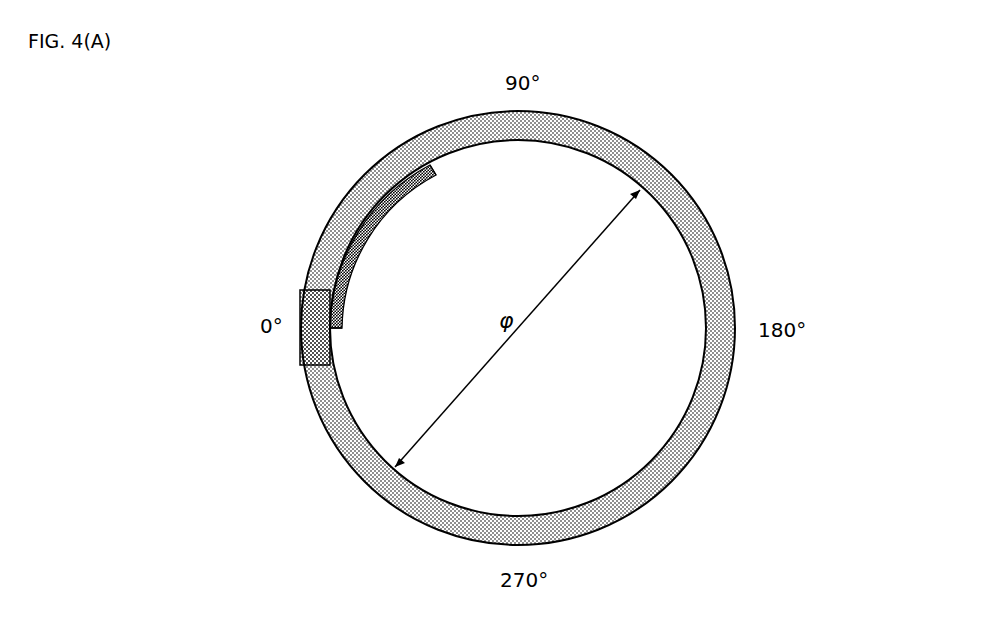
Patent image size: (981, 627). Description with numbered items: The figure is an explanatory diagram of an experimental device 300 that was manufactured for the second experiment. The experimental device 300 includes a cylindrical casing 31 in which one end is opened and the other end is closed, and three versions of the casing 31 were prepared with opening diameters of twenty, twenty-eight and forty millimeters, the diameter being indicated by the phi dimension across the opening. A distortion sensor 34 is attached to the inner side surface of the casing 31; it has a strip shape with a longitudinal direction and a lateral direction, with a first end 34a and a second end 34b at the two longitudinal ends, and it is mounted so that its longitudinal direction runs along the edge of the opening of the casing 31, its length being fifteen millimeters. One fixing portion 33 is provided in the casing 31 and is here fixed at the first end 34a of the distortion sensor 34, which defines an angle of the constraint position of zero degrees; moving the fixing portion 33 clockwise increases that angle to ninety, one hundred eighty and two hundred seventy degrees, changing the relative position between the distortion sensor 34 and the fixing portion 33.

The experimental device 300 is at (598, 118).
The casing 31 is at (686, 444).
The fixing portion 33 is at (300, 291).
The distortion sensor 34 is at (366, 232).
The first end 34a is at (340, 322).
The second end 34b is at (426, 178).